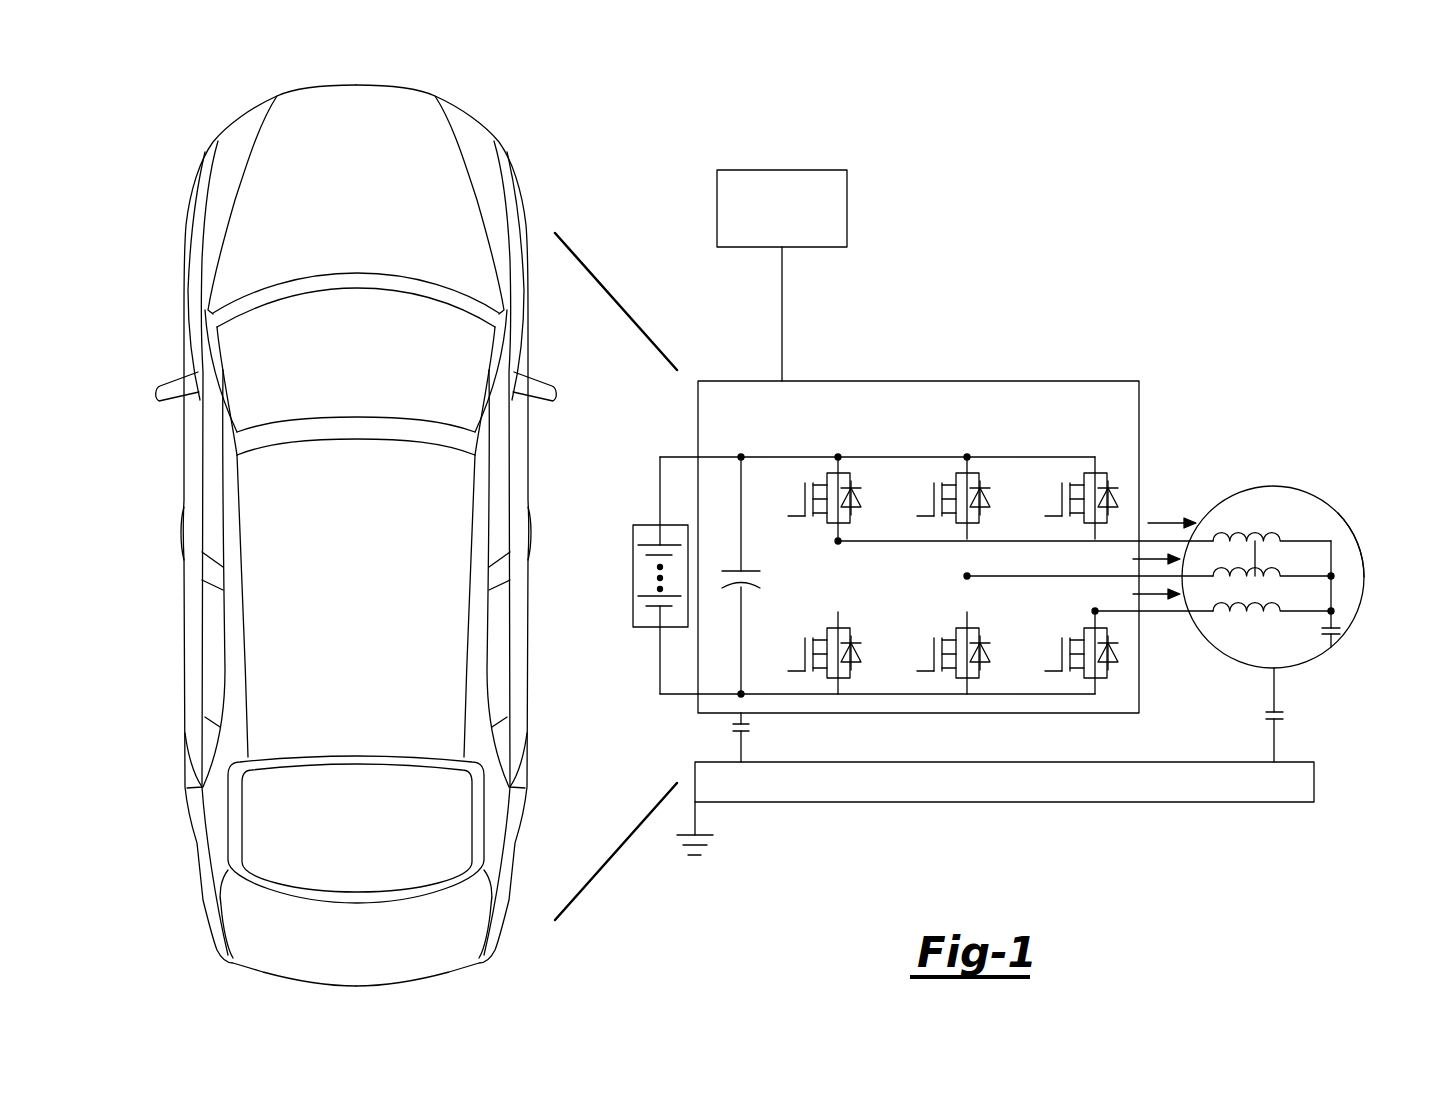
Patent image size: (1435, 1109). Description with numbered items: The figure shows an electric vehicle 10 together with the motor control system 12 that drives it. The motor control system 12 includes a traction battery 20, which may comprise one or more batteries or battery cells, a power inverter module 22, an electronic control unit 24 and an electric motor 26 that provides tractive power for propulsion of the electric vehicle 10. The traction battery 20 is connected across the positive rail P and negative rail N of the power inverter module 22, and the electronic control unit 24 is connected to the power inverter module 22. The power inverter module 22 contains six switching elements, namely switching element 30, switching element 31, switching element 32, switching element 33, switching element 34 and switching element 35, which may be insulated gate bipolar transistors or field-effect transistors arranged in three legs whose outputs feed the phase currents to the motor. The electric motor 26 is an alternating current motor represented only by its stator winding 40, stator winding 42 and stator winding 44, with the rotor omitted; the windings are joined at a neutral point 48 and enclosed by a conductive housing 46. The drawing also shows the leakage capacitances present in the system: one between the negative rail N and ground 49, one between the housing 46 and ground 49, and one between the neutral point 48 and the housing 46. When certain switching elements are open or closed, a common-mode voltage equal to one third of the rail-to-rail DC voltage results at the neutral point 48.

The electric vehicle 10 is at (186, 119).
The motor control system 12 is at (1097, 318).
The traction battery 20 is at (633, 577).
The power inverter module 22 is at (920, 381).
The electronic control unit 24 is at (782, 170).
The electric motor 26 is at (1298, 489).
The switching element 30 is at (856, 478).
The switching element 31 is at (830, 628).
The switching element 32 is at (988, 478).
The switching element 33 is at (959, 628).
The switching element 34 is at (1114, 478).
The switching element 35 is at (1088, 628).
The stator winding 40 is at (1238, 532).
The stator winding 42 is at (1255, 541).
The stator winding 44 is at (1230, 618).
The conductive housing 46 is at (1364, 553).
The neutral point 48 is at (1331, 576).
The ground 49 is at (1314, 782).